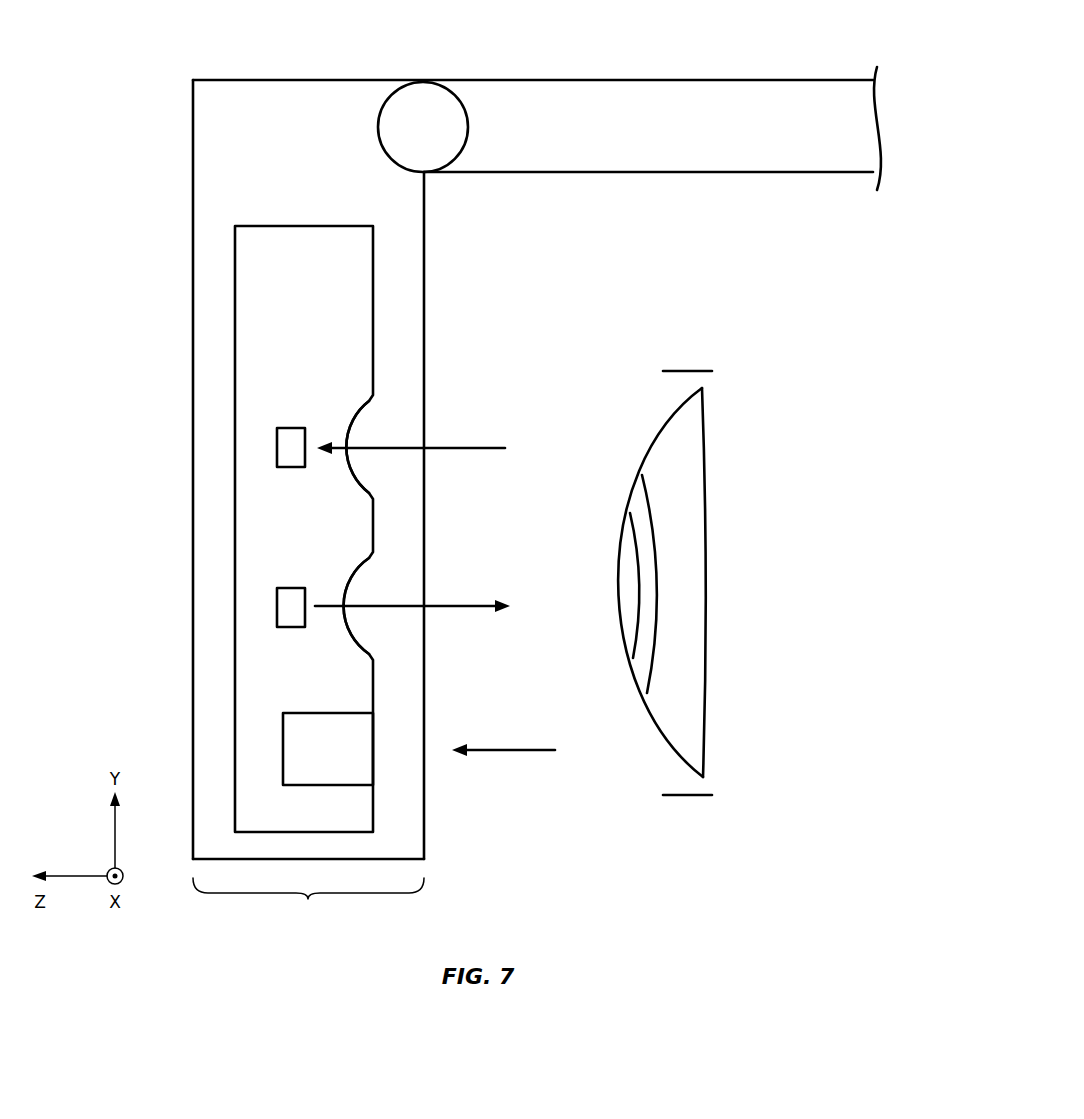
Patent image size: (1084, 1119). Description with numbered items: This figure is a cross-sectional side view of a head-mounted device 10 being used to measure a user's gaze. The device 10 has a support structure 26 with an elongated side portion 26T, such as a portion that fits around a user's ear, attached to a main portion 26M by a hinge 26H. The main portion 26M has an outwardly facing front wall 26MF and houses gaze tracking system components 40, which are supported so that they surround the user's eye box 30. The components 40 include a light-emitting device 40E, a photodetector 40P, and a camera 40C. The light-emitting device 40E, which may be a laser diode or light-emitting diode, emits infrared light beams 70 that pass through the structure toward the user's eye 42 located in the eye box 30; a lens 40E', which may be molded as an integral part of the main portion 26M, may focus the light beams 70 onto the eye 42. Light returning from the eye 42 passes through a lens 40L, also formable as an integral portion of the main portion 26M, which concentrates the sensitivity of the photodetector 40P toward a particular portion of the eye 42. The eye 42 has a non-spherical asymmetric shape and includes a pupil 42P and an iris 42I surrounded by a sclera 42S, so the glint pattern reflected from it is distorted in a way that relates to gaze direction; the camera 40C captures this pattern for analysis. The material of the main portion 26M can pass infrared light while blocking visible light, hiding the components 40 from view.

The head-mounted device 10 is at (887, 206).
The support structure 26 is at (235, 57).
The hinge 26H is at (425, 98).
The elongated side portion 26T is at (760, 98).
The main portion 26M is at (308, 902).
The front wall 26MF is at (205, 704).
The eye box 30 is at (686, 366).
The gaze tracking system components 40 is at (277, 482).
The photodetector 40P is at (291, 430).
The light-emitting device 40E is at (292, 581).
The lens 40E' is at (412, 590).
The lens 40L is at (370, 429).
The camera 40C is at (329, 781).
The eye 42 is at (701, 664).
The sclera 42S is at (680, 463).
The iris 42I is at (647, 537).
The pupil 42P is at (631, 592).
The light beams 70 is at (465, 453).